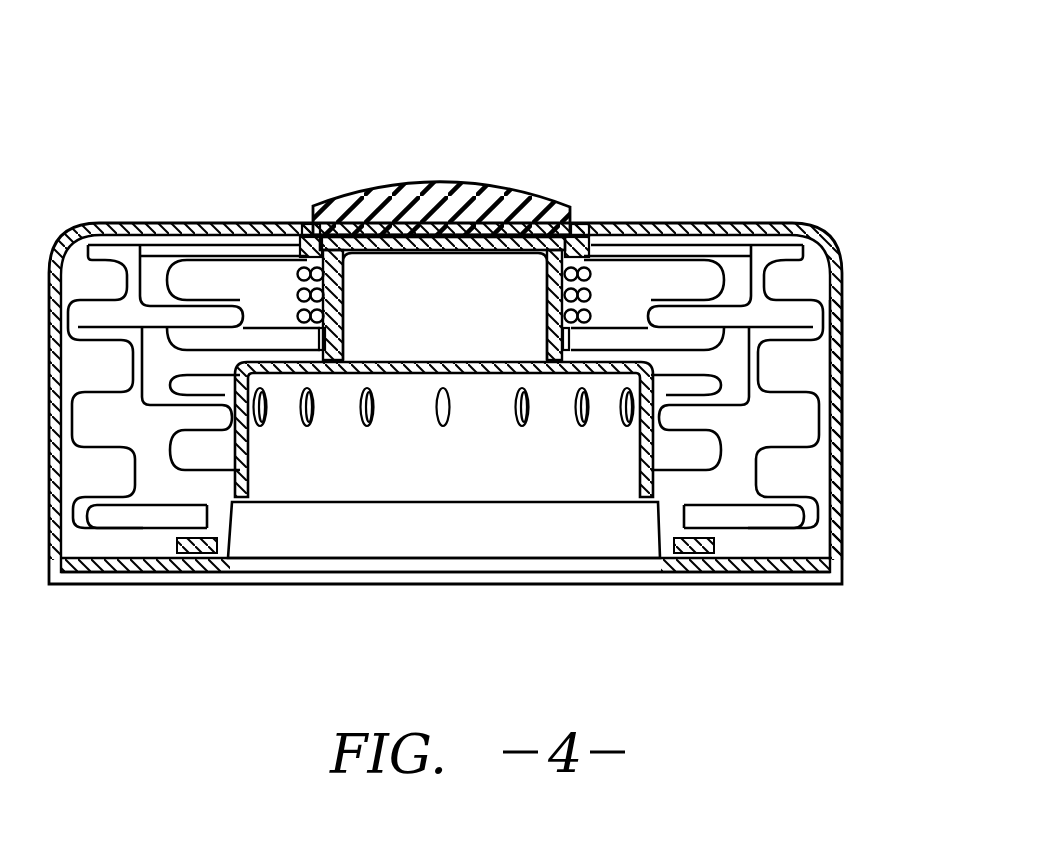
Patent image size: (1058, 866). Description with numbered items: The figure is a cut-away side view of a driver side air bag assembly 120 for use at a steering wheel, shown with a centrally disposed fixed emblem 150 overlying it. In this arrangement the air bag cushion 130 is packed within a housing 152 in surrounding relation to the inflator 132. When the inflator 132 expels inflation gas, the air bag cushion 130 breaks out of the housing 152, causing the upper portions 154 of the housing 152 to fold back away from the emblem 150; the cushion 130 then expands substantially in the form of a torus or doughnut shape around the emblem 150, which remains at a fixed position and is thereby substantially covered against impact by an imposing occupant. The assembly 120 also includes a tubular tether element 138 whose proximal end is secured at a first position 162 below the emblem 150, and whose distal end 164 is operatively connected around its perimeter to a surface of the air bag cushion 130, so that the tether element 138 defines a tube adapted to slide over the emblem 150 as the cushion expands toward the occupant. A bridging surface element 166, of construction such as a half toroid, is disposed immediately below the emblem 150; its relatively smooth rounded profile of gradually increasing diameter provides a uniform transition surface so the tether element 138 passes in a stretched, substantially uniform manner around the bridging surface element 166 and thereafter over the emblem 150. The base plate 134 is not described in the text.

The driver side air bag assembly 120 is at (480, 324).
The air bag cushion 130 is at (803, 292).
The inflator 132 is at (560, 478).
The base plate 134 is at (258, 585).
The tubular tether element 138 is at (568, 258).
The fixed emblem 150 is at (418, 182).
The housing 152 is at (847, 412).
The upper portions of the housing 154 is at (197, 222).
The first position 162 is at (318, 332).
The distal end 164 is at (305, 266).
The bridging surface element 166 is at (302, 222).